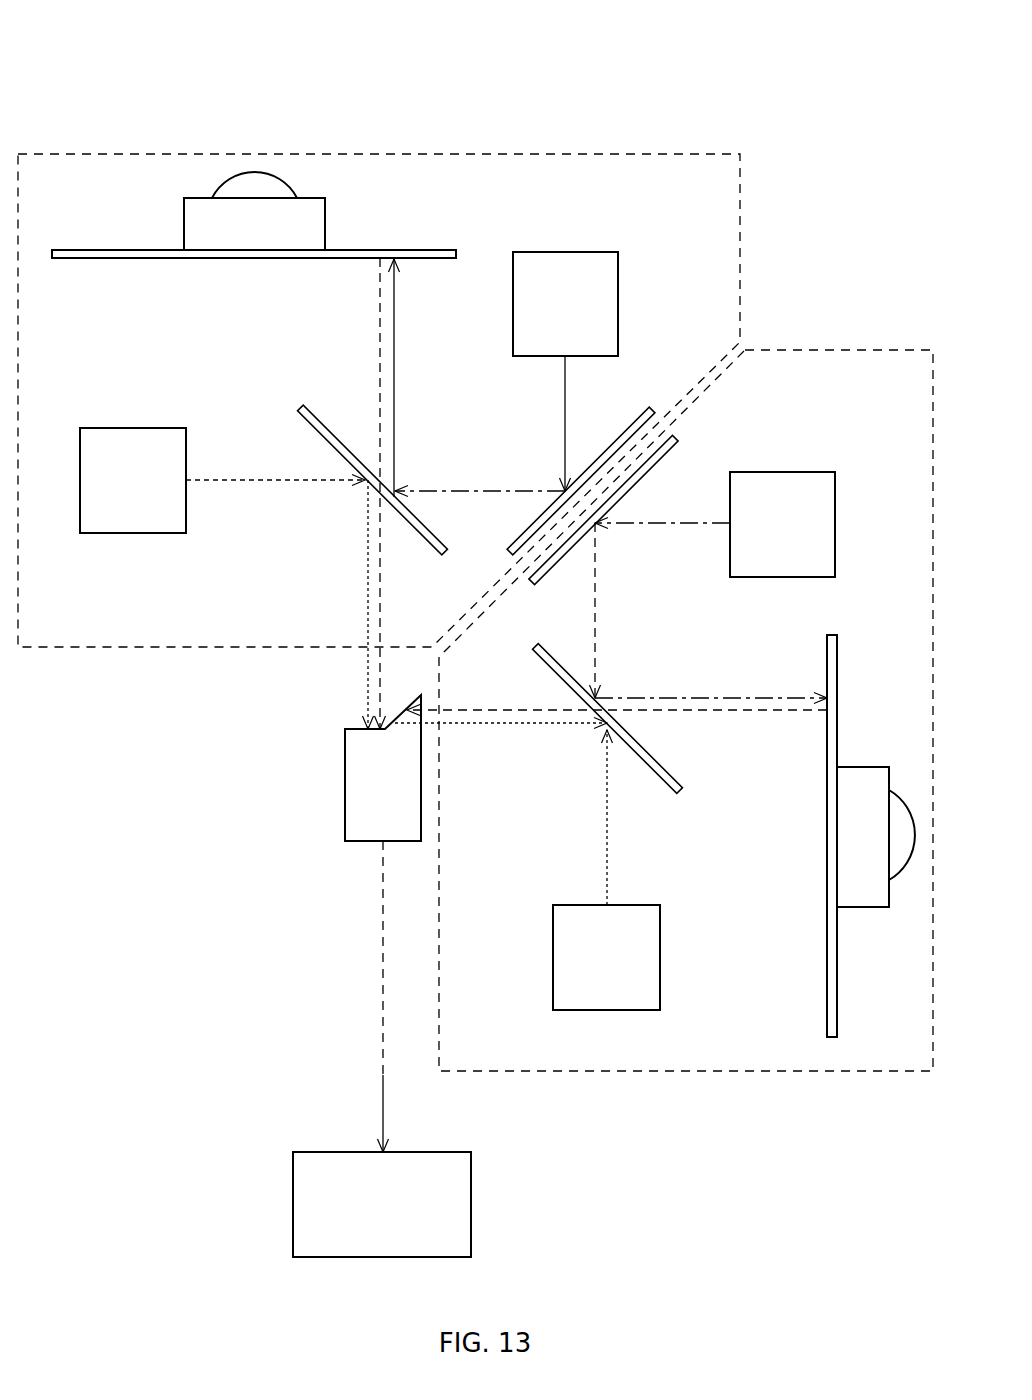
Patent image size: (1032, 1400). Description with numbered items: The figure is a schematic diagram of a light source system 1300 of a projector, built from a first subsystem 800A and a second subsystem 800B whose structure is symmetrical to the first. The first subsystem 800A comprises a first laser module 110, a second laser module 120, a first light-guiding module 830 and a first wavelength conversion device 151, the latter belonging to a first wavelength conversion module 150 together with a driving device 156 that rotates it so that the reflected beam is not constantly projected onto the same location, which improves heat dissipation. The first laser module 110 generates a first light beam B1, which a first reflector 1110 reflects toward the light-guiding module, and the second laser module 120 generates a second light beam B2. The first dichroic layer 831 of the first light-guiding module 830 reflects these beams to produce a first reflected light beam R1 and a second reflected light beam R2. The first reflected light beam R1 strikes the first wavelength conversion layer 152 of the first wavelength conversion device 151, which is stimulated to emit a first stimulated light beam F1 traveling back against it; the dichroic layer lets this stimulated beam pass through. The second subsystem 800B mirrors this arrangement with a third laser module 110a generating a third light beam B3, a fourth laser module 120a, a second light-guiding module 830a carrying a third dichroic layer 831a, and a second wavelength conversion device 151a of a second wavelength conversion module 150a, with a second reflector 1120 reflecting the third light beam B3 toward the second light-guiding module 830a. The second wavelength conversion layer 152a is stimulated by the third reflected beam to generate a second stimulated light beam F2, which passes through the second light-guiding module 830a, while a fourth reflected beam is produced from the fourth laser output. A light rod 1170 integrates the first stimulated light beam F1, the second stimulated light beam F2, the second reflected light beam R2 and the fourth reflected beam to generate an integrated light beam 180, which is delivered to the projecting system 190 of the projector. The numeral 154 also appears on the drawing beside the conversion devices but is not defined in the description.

The light source system 1300 is at (185, 75).
The first subsystem 800A is at (399, 154).
The second subsystem 800B is at (855, 350).
The first wavelength conversion module 150 is at (472, 536).
The second wavelength conversion module 150a is at (854, 833).
The first wavelength conversion device 151 is at (53, 250).
The second wavelength conversion device 151a is at (835, 1035).
The first wavelength conversion layer 152 is at (433, 261).
The second wavelength conversion layer 152a is at (826, 640).
The second surface 154 is at (435, 250).
The driving device 156 is at (325, 217).
The first laser module 110 is at (562, 252).
The third laser module 110a is at (835, 492).
The second laser module 120 is at (133, 428).
The fourth laser module 120a is at (660, 955).
The first light-guiding module 830 is at (362, 457).
The second light-guiding module 830a is at (652, 736).
The first dichroic layer 831 is at (298, 406).
The third dichroic layer 831a is at (680, 790).
The first reflector 1110 is at (650, 408).
The second reflector 1120 is at (677, 432).
The light rod 1170 is at (345, 762).
The integrated light beam 180 is at (383, 1033).
The projecting system 190 is at (470, 1203).
The first reflected light beam R1 is at (396, 322).
The second reflected light beam R2 is at (366, 592).
The first stimulated light beam F1 is at (380, 340).
The second stimulated light beam F2 is at (490, 710).
The first light beam B1 is at (565, 420).
The second light beam B2 is at (260, 482).
The third light beam B3 is at (665, 525).